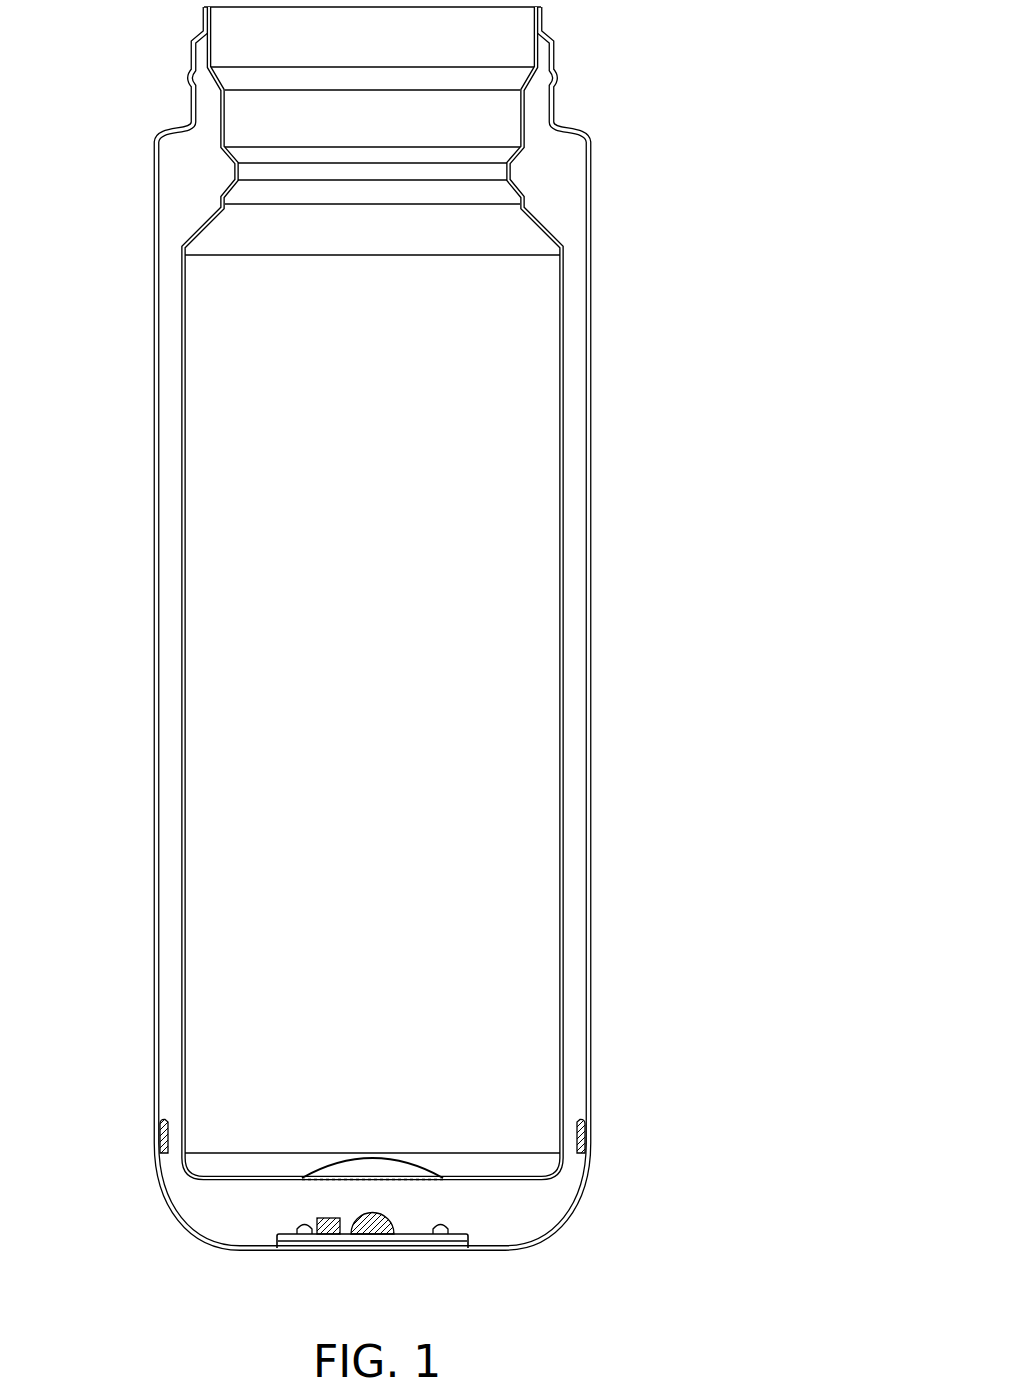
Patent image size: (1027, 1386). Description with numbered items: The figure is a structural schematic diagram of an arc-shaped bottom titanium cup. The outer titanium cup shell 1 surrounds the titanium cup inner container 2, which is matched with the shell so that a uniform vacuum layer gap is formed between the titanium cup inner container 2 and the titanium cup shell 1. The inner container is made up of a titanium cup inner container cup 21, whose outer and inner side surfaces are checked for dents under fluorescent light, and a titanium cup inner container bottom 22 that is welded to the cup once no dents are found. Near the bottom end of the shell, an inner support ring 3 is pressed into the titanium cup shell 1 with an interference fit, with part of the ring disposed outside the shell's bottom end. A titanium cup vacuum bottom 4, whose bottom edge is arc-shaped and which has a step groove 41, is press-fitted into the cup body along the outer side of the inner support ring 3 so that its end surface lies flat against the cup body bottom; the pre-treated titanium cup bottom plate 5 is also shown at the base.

The titanium cup shell 1 is at (588, 323).
The titanium cup inner container 2 is at (562, 482).
The titanium cup inner container cup 21 is at (303, 452).
The titanium cup inner container bottom 22 is at (313, 1175).
The inner support ring 3 is at (585, 1133).
The titanium cup vacuum bottom 4 is at (568, 1213).
The step groove 41 is at (342, 1245).
The titanium cup bottom plate 5 is at (438, 1245).